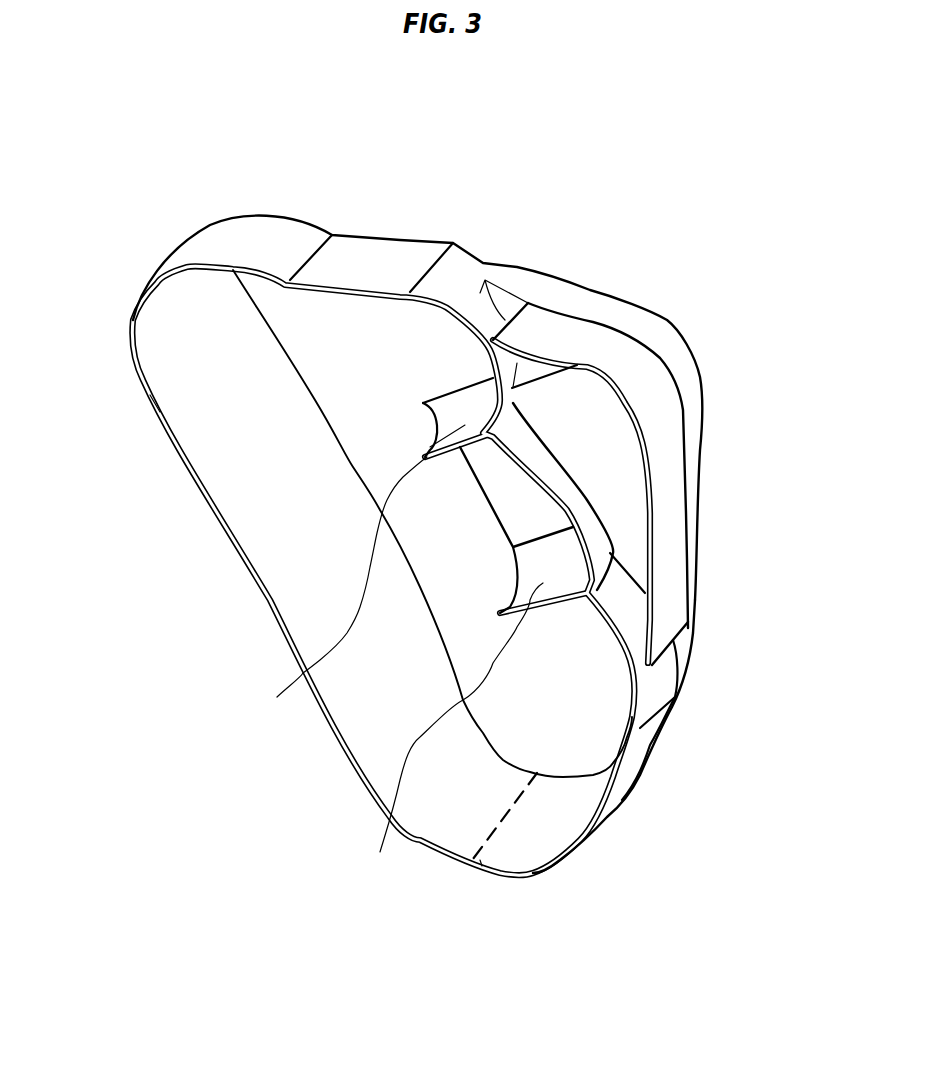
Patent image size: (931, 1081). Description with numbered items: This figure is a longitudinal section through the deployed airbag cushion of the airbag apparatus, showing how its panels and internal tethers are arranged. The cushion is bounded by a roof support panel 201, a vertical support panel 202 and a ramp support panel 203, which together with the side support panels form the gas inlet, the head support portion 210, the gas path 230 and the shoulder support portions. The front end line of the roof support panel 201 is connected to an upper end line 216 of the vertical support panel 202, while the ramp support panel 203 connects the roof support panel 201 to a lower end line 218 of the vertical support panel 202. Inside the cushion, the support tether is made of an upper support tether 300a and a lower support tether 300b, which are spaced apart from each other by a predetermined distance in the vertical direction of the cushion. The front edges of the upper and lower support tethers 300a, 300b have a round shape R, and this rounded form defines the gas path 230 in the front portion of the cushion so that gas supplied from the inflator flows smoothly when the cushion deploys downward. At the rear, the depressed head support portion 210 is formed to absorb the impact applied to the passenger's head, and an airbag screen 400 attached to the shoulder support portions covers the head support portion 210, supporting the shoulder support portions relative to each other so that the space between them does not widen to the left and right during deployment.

The roof support panel 201 is at (207, 243).
The upper end line of the vertical support panel 216 is at (423, 262).
The airbag screen 400 is at (580, 330).
The round shape R is at (433, 427).
The ramp support panel 203 is at (177, 447).
The gas path 230 is at (282, 487).
The upper support tether 300a is at (320, 594).
The lower support tether 300b is at (440, 737).
The head support portion 210 is at (603, 555).
The vertical support panel 202 is at (643, 755).
The lower end line of the vertical support panel 218 is at (503, 817).